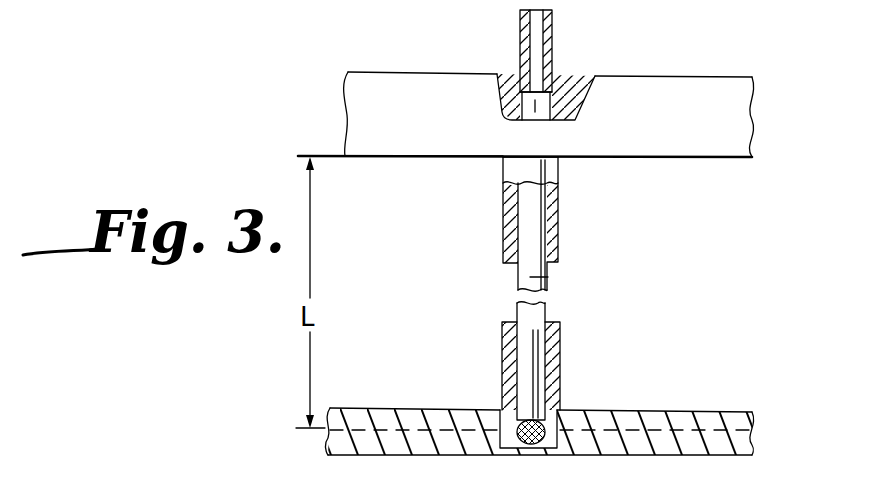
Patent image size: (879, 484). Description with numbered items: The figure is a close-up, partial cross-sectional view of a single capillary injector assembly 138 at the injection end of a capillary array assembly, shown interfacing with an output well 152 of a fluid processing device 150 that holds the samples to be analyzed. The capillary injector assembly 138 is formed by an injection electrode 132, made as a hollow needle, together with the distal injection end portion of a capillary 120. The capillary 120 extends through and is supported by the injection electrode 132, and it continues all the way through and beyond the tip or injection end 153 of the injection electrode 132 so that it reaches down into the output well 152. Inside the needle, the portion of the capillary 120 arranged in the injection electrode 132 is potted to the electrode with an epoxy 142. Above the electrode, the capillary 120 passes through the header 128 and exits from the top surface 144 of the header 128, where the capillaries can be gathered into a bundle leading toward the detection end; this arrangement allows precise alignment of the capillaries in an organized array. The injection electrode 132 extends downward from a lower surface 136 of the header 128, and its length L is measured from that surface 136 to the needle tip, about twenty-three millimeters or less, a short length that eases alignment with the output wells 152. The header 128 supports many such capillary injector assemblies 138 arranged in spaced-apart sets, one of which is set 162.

The capillary 120 is at (548, 277).
The header 128 is at (387, 88).
The injection electrode 132 is at (560, 210).
The surface of the header 136 is at (425, 160).
The capillary injector assembly 138 is at (676, 292).
The epoxy 142 is at (503, 240).
The top surface of the header 144 is at (637, 80).
The fluid processing device 150 is at (302, 0).
The output well 152 is at (616, 0).
The tip or injection end of the injection electrode 153 is at (552, 435).
The set of capillary injector assemblies 162 is at (482, 0).